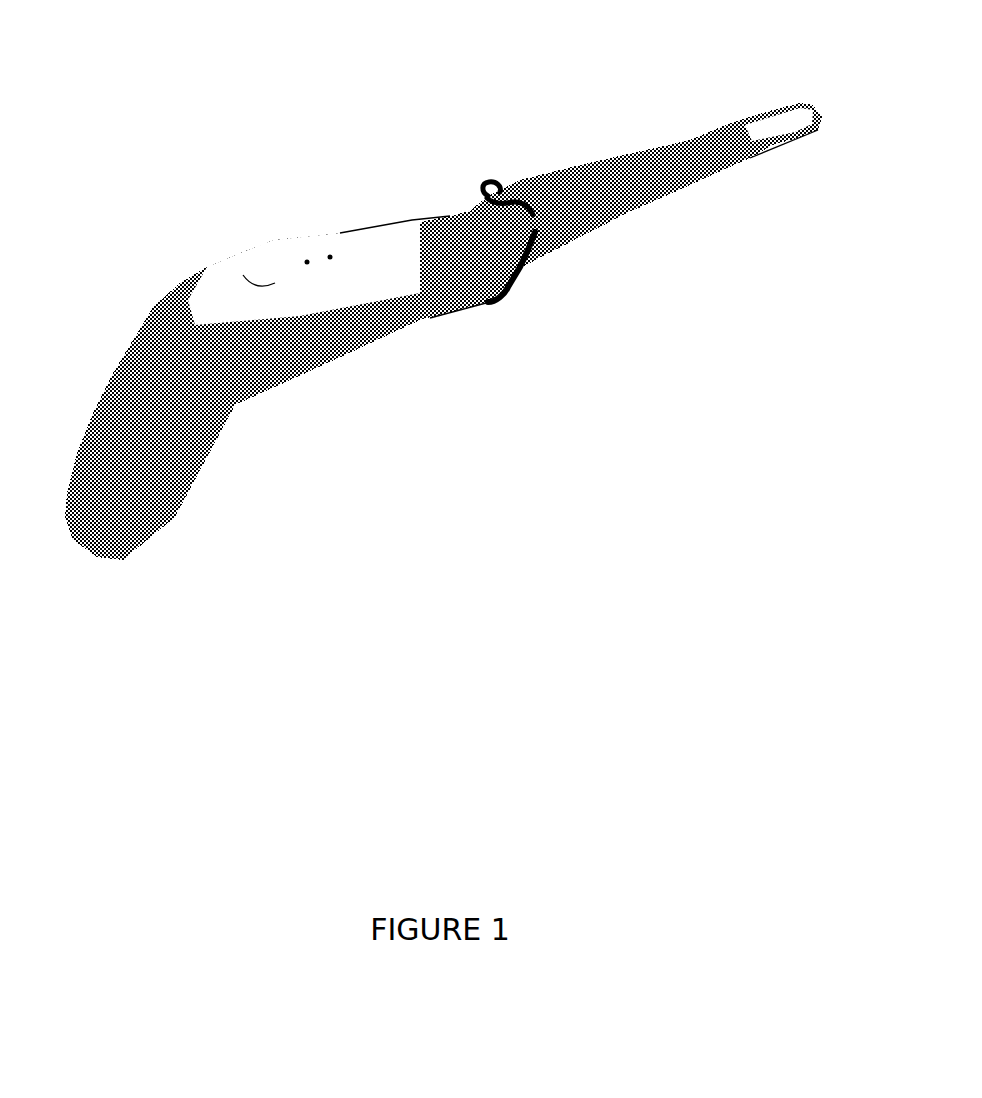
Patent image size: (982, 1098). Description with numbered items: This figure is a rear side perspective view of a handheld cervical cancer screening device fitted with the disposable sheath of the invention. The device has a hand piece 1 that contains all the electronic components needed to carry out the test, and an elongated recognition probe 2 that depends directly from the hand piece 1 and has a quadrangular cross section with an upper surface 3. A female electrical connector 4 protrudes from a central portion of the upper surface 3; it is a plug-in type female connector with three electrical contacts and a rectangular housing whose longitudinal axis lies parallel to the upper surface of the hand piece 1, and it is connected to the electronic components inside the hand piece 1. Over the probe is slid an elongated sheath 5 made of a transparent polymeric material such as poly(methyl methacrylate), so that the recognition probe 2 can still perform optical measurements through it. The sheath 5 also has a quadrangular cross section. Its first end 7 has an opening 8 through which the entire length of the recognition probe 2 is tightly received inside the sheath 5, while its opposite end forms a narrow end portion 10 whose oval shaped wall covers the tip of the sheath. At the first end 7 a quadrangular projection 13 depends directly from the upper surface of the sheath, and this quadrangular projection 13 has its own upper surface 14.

The hand piece 1 is at (235, 405).
The recognition probe 2 is at (437, 282).
The upper surface 3 is at (419, 233).
The female electrical connector 4 is at (375, 237).
The elongated sheath 5 is at (753, 135).
The first end 7 is at (525, 282).
The opening 8 is at (492, 285).
The narrow end portion 10 is at (785, 138).
The quadrangular projection 13 is at (483, 197).
The upper surface 14 is at (498, 192).